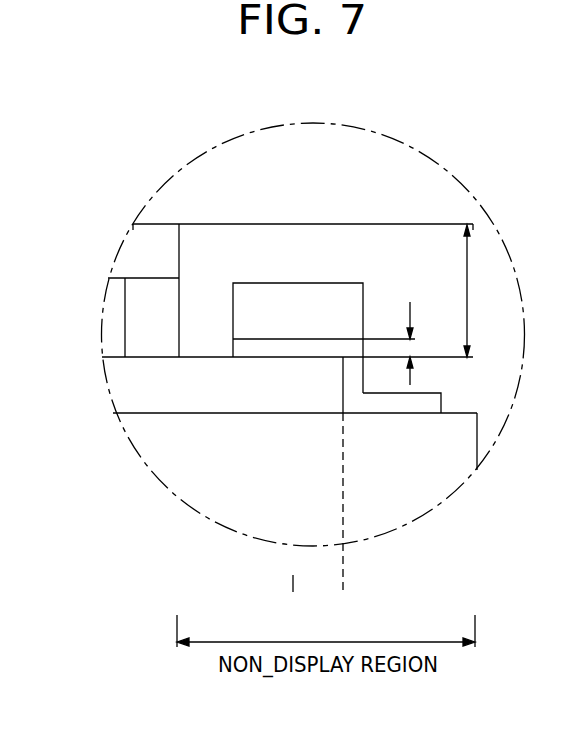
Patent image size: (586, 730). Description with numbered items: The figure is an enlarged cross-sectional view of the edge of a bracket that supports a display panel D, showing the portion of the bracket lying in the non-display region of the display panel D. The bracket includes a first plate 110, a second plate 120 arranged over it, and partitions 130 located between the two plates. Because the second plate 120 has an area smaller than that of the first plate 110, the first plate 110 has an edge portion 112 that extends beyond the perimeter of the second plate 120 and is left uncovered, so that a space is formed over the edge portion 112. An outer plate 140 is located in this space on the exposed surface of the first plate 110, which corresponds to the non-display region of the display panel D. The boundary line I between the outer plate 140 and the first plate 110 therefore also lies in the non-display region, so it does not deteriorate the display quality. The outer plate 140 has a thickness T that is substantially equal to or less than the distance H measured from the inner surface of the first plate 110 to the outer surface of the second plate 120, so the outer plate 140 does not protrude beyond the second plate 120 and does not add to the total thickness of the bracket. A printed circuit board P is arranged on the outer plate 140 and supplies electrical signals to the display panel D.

The first plate 110 is at (121, 393).
The edge portion 112 is at (203, 357).
The second plate 120 is at (123, 250).
The partitions 130 is at (116, 318).
The outer plate 140 is at (406, 402).
The printed circuit board P is at (322, 293).
The display panel D is at (166, 463).
The distance H is at (476, 290).
The thickness T is at (420, 343).
The boundary line I is at (343, 580).